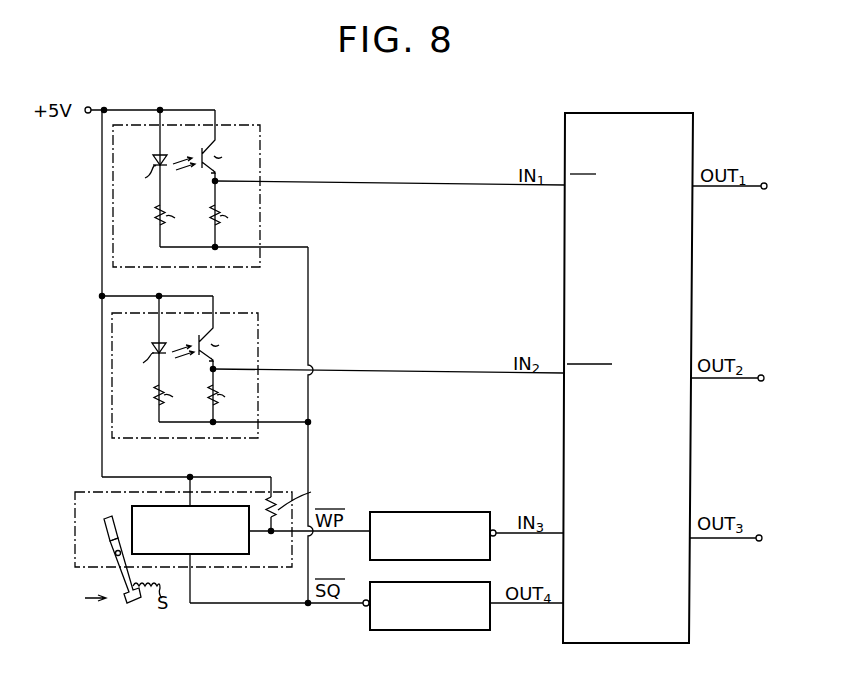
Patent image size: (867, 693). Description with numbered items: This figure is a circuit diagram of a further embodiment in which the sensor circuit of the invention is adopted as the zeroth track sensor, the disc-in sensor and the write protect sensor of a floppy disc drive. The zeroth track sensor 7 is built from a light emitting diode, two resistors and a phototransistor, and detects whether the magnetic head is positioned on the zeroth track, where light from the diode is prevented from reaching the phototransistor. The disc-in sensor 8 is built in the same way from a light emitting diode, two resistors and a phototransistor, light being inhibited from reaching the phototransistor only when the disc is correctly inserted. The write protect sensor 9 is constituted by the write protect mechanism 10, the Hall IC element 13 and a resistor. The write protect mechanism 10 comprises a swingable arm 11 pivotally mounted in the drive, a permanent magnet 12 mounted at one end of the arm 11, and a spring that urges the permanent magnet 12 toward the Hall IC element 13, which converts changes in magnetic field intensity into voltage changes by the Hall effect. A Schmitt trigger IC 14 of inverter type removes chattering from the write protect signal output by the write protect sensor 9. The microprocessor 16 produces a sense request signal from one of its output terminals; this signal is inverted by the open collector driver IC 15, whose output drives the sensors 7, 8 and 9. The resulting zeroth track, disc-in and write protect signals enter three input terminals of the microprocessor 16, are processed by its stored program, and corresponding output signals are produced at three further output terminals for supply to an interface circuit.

The zeroth track sensor 7 is at (258, 125).
The disc-in sensor 8 is at (258, 313).
The write protect sensor 9 is at (283, 492).
The write protect mechanism 10 is at (92, 546).
The swingable arm 11 is at (124, 586).
The permanent magnet 12 is at (113, 512).
The Hall IC element 13 is at (249, 540).
The Schmitt trigger IC 14 is at (478, 512).
The driver IC 15 is at (491, 612).
The microprocessor 16 is at (694, 118).